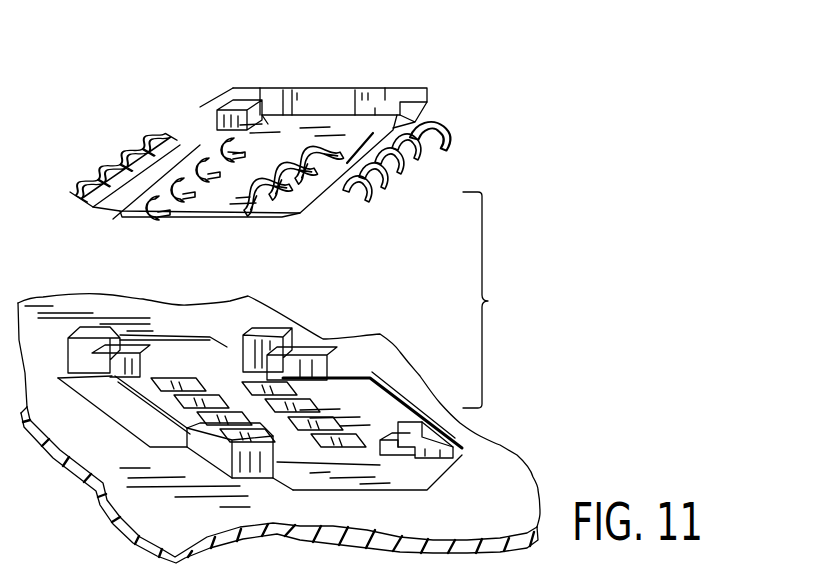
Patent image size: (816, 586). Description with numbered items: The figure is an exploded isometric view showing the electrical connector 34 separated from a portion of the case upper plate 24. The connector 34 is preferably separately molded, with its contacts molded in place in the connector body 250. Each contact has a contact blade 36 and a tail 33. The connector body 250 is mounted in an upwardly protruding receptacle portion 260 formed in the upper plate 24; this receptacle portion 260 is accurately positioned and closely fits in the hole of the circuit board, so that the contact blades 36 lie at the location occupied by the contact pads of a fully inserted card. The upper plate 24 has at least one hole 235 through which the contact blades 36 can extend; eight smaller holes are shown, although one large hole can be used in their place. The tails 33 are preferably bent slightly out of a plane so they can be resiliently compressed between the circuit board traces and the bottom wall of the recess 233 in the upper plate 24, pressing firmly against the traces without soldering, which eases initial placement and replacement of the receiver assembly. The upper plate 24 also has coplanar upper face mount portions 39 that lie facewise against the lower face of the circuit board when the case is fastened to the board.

The electrical connector 34 is at (198, 78).
The contact blades 36 is at (243, 153).
The connector body 250 is at (347, 92).
The tails 33 is at (167, 133).
The upper plate 24 is at (484, 440).
The recess 233 is at (192, 345).
The hole 235 is at (177, 377).
The receptacle portion 260 is at (322, 338).
The upper face mount portions 39 is at (493, 517).